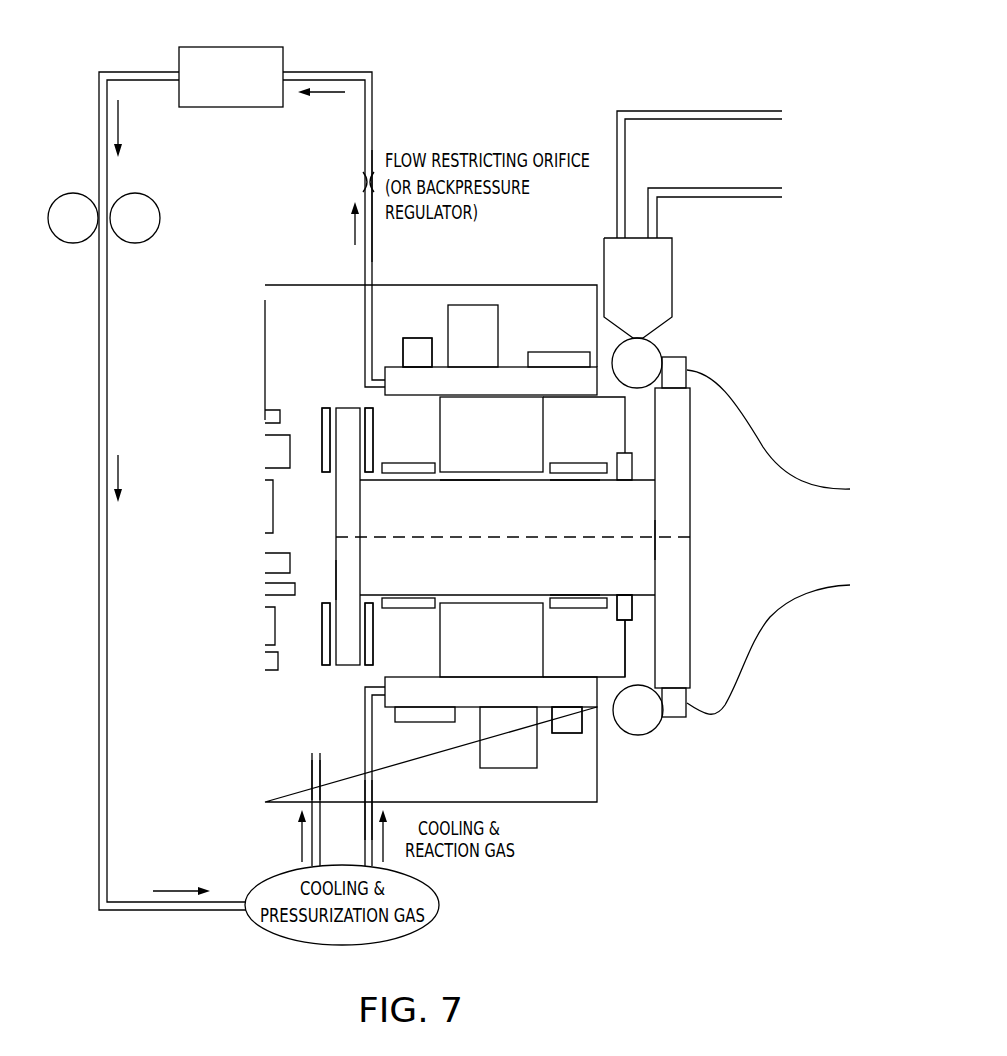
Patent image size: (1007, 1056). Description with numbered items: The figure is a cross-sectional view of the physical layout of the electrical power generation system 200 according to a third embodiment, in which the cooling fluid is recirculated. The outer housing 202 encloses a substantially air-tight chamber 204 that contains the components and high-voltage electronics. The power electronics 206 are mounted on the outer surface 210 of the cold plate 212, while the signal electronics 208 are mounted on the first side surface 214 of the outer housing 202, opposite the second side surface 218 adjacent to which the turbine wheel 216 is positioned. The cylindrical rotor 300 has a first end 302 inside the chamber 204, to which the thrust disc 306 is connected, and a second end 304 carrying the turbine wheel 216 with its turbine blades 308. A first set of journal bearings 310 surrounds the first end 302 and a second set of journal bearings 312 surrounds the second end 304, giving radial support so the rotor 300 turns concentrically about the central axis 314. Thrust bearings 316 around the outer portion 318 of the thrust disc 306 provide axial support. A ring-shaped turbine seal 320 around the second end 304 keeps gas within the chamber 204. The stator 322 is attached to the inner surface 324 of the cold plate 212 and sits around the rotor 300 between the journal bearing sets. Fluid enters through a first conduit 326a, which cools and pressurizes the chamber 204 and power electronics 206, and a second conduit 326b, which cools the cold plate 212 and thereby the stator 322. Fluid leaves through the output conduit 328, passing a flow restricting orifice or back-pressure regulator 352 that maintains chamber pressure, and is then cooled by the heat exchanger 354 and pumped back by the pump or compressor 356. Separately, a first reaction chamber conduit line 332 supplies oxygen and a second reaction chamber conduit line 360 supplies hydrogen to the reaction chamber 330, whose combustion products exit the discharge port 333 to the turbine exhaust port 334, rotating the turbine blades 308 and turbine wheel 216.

The electrical power generation system 200 is at (298, 263).
The outer housing 202 is at (565, 803).
The chamber 204 is at (345, 732).
The power electronics 206 is at (552, 327).
The signal electronics 208 is at (224, 540).
The outer surface 210 is at (440, 365).
The cold plate 212 is at (558, 398).
The first side surface 214 is at (265, 378).
The turbine wheel 216 is at (745, 525).
The second side surface 218 is at (625, 643).
The rotor 300 is at (530, 585).
The first end 302 is at (365, 577).
The second end 304 is at (645, 550).
The thrust disc 306 is at (330, 553).
The turbine blades 308 is at (690, 368).
The first set of journal bearings 310 is at (410, 477).
The second set of journal bearings 312 is at (568, 597).
The central axis 314 is at (470, 536).
The thrust bearings 316 is at (368, 402).
The outer portion 318 is at (348, 430).
The turbine seal 320 is at (620, 597).
The stator 322 is at (515, 465).
The inner surface 324 is at (573, 400).
The first conduit 326a is at (312, 768).
The second conduit 326b is at (380, 860).
The output conduit 328 is at (372, 265).
The reaction chamber 330 is at (682, 288).
The first reaction chamber conduit line 332 is at (705, 188).
The discharge port 333 is at (640, 352).
The turbine exhaust port 334 is at (783, 542).
The flow restricting orifice or back-pressure regulator 352 is at (360, 181).
The heat exchanger 354 is at (218, 47).
The pump or compressor 356 is at (73, 243).
The second reaction chamber conduit line 360 is at (675, 111).